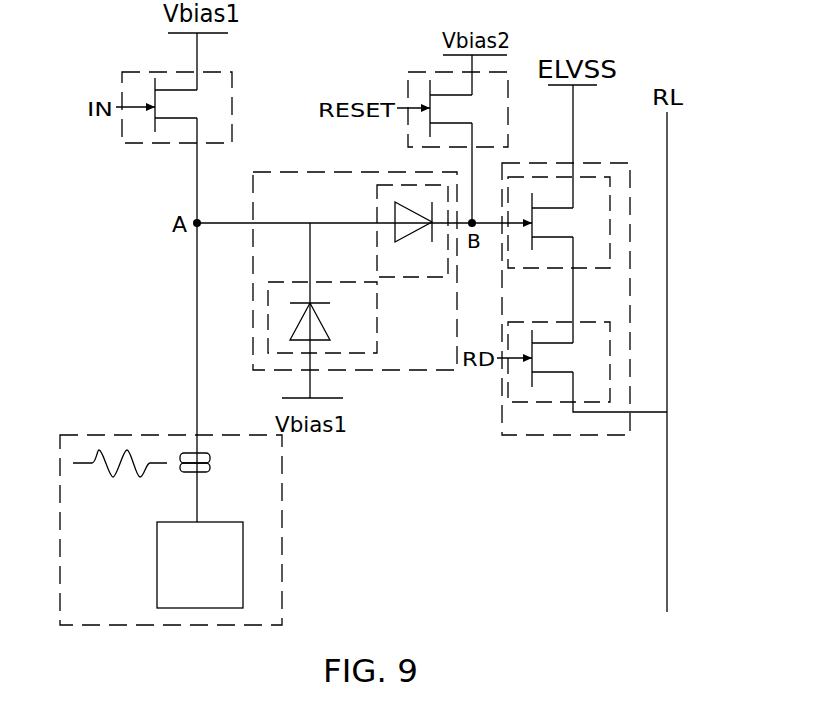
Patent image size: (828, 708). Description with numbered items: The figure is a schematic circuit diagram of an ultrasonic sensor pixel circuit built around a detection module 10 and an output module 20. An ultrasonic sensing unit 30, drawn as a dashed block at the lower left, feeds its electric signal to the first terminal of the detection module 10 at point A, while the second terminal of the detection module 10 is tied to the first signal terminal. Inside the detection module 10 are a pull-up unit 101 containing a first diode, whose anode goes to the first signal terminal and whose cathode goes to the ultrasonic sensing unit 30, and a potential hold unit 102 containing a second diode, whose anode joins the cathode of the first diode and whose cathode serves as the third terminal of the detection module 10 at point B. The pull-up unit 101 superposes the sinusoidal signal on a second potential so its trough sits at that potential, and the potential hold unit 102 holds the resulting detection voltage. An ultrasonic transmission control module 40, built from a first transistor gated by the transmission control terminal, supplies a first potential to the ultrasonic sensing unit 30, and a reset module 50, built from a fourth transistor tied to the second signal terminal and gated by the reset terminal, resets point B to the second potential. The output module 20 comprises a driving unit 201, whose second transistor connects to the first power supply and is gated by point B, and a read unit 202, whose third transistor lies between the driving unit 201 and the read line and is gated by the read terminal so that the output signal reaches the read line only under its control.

The detection module 10 is at (355, 263).
The pull-up unit 101 is at (378, 317).
The potential hold unit 102 is at (412, 279).
The output module 20 is at (566, 336).
The driving unit 201 is at (590, 268).
The read unit 202 is at (560, 402).
The ultrasonic sensing unit 30 is at (282, 530).
The ultrasonic transmission control module 40 is at (177, 72).
The reset module 50 is at (427, 72).